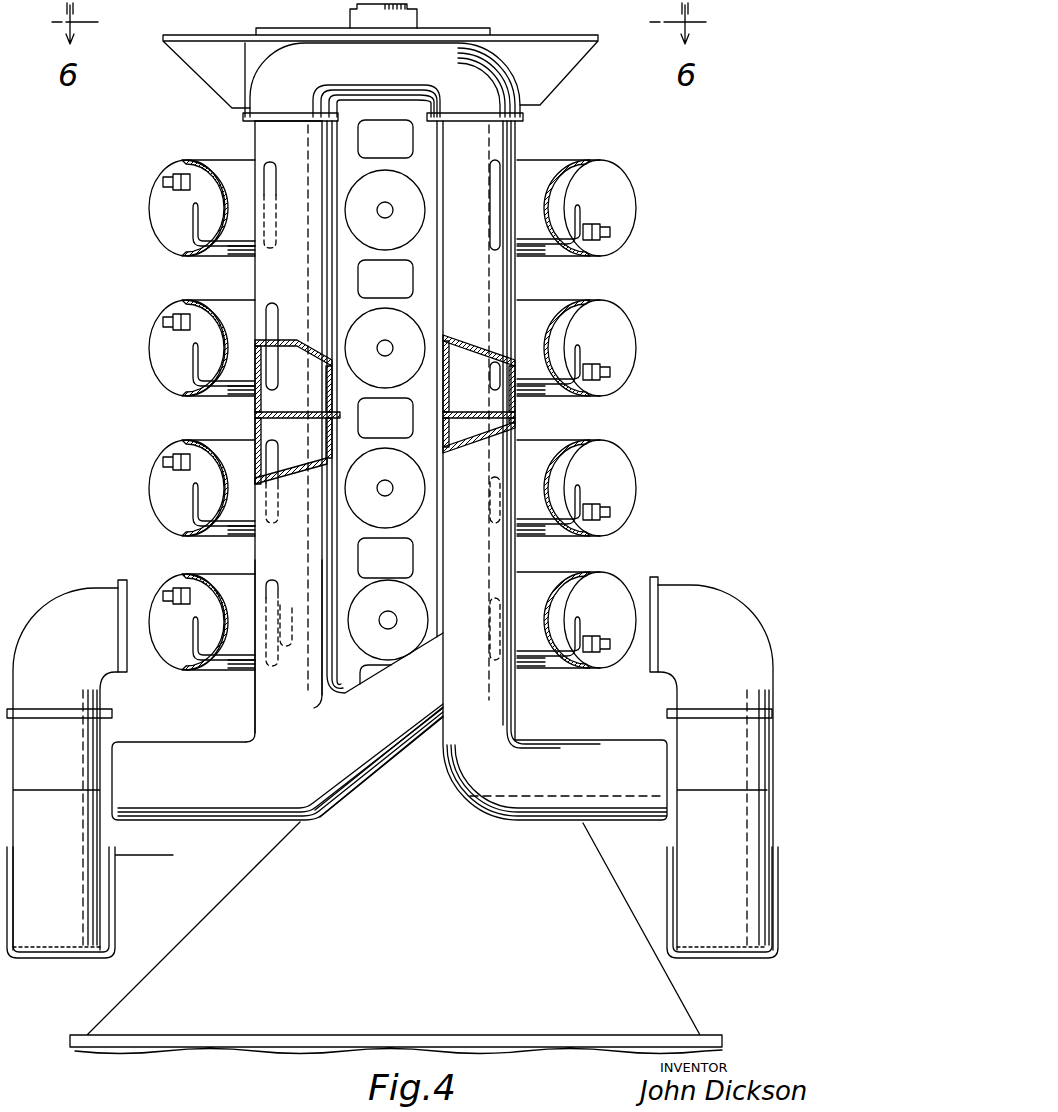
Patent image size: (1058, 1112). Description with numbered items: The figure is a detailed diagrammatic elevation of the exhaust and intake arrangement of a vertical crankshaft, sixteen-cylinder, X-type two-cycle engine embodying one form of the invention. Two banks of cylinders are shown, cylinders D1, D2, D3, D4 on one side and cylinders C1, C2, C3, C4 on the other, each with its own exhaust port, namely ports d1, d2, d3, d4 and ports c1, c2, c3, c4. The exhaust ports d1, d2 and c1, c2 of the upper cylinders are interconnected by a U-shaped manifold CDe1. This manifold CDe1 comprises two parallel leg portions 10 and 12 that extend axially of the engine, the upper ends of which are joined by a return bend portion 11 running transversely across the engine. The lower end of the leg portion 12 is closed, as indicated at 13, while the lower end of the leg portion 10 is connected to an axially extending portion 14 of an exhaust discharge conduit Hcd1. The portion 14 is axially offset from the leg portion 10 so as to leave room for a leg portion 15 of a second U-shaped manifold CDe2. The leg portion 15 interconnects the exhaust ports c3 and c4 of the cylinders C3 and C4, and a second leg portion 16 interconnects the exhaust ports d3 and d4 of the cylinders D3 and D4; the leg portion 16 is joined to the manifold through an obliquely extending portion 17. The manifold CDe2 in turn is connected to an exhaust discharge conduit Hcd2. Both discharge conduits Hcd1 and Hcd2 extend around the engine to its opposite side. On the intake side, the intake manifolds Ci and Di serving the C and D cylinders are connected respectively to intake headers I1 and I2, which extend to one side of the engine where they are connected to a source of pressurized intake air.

The return bend portion 11 is at (478, 62).
The U-shaped manifold CDe1 is at (262, 145).
The second U-shaped manifold CDe2 is at (275, 692).
The leg portion 12 is at (272, 277).
The leg portion 10 is at (475, 268).
The leg portion 15 is at (450, 432).
The closed lower end 13 is at (258, 408).
The second leg portion 16 is at (275, 556).
The axially extending portion 14 is at (517, 340).
The intake manifold Ci is at (645, 653).
The intake manifold Di is at (104, 676).
The exhaust port d1 is at (270, 196).
The exhaust port d2 is at (275, 360).
The exhaust port d3 is at (279, 456).
The exhaust port d4 is at (277, 630).
The exhaust port c1 is at (490, 205).
The exhaust port c2 is at (490, 374).
The exhaust port c3 is at (490, 490).
The exhaust port c4 is at (490, 645).
The cylinder D1 is at (150, 206).
The cylinder D2 is at (150, 355).
The cylinder D3 is at (150, 490).
The cylinder D4 is at (166, 580).
The cylinder C1 is at (615, 205).
The cylinder C2 is at (615, 352).
The cylinder C3 is at (615, 490).
The cylinder C4 is at (612, 585).
The exhaust discharge conduit Hcd2 is at (290, 797).
The exhaust discharge conduit Hcd1 is at (566, 800).
The obliquely extending portion 17 is at (372, 740).
The intake header I2 is at (50, 915).
The intake header I1 is at (710, 920).